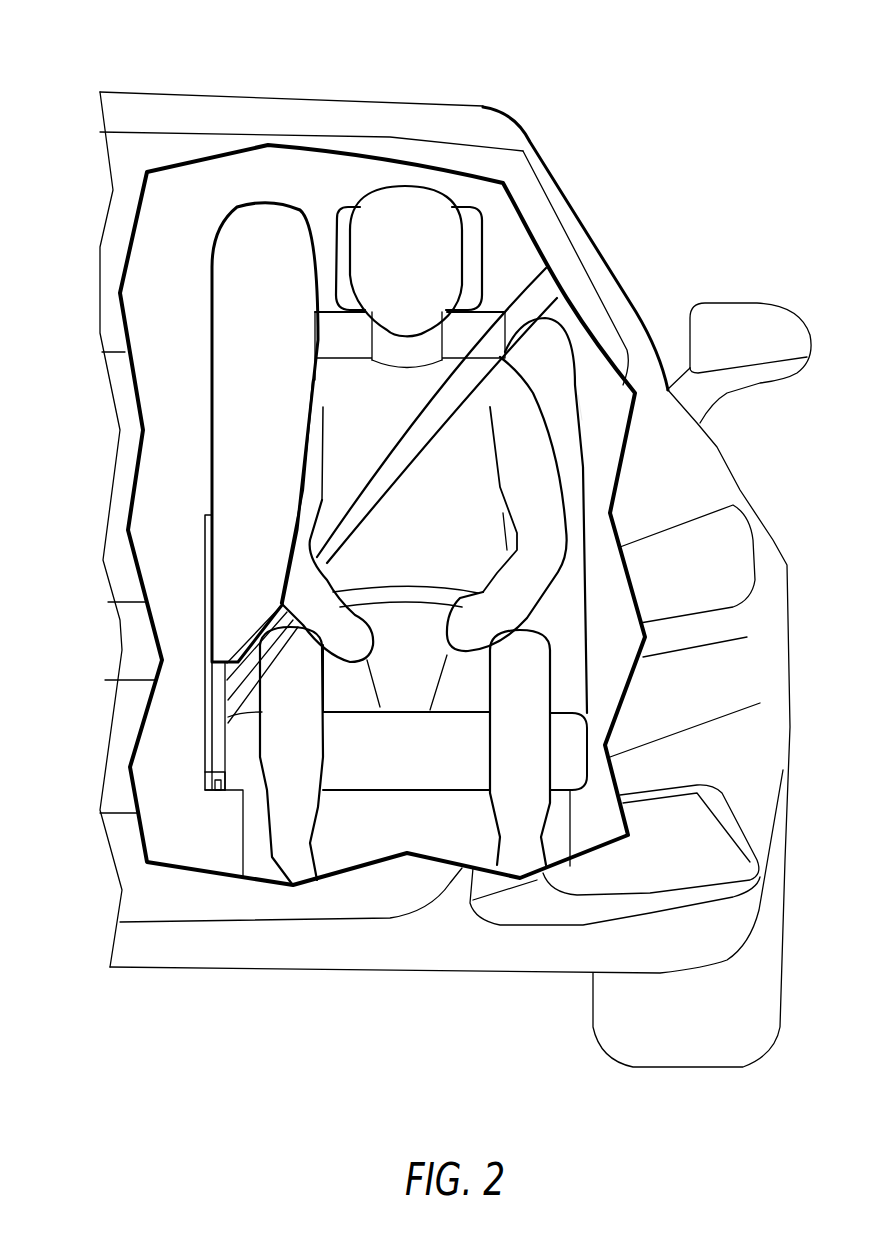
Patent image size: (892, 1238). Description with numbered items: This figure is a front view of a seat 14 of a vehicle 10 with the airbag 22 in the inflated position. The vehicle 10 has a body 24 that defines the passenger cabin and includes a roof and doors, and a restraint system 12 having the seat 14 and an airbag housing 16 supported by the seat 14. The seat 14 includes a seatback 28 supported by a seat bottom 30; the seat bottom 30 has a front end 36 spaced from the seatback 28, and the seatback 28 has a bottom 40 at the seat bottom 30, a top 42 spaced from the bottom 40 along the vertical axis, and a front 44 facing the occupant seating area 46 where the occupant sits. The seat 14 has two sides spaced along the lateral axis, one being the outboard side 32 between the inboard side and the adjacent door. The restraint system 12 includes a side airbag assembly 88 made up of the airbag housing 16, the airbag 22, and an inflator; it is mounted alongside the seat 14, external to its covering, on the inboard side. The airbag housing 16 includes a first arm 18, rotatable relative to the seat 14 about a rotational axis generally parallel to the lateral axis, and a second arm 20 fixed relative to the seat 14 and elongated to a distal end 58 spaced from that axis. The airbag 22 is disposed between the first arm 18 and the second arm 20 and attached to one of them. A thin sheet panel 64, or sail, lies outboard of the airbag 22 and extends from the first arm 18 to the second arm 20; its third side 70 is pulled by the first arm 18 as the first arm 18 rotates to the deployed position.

The vehicle 10 is at (723, 110).
The restraint system 12 is at (317, 186).
The seat 14 is at (573, 358).
The airbag housing 16 is at (205, 781).
The first arm 18 is at (228, 677).
The second arm 20 is at (206, 795).
The airbag 22 is at (213, 265).
The body 24 is at (583, 198).
The seatback 28 is at (587, 617).
The seat bottom 30 is at (364, 793).
The outboard side 32 is at (580, 407).
The front end 36 is at (433, 770).
The bottom 40 is at (587, 703).
The top 42 is at (487, 310).
The front 44 is at (553, 361).
The occupant seating area 46 is at (570, 590).
The distal end 58 is at (218, 782).
The panel 64 is at (205, 533).
The third side 70 is at (207, 653).
The side airbag assembly 88 is at (178, 423).